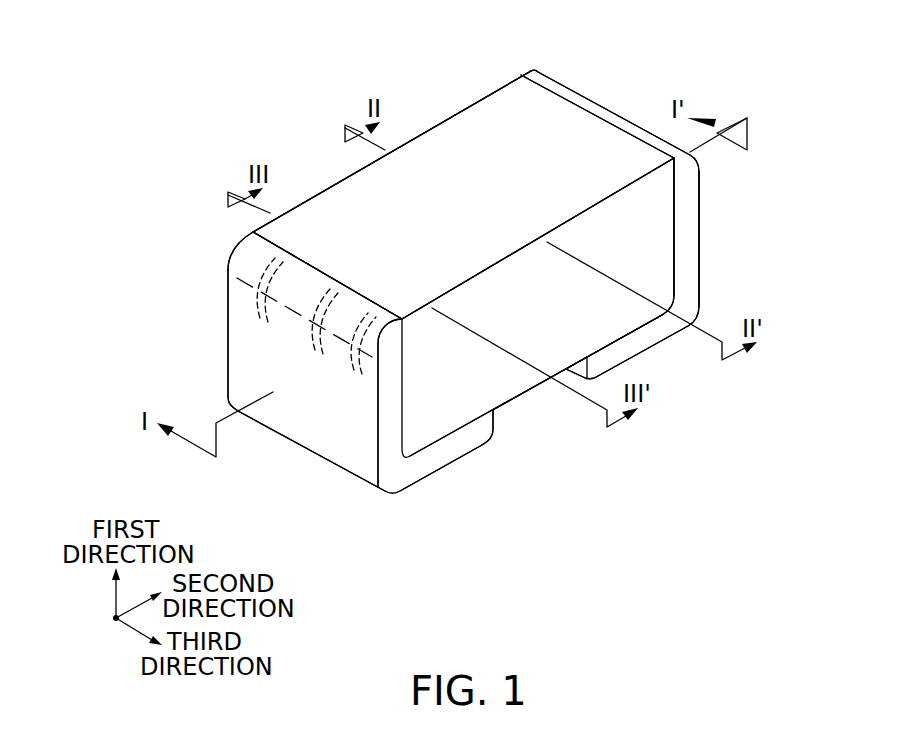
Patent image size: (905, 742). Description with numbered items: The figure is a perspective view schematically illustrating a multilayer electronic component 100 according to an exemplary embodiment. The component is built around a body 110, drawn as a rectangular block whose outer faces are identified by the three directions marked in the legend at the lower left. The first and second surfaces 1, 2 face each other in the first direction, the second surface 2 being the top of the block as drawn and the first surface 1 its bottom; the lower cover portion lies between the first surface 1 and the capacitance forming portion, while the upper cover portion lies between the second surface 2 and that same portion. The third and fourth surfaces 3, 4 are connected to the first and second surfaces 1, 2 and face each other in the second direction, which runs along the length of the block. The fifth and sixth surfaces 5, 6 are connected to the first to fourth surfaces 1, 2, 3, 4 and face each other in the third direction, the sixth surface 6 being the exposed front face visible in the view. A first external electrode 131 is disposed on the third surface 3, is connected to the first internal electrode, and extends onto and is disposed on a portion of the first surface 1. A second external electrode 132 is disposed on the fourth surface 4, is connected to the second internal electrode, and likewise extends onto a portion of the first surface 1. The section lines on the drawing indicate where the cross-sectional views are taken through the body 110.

The multilayer electronic component 100 is at (219, 44).
The body 110 is at (437, 145).
The first external electrode 131 is at (243, 253).
The second external electrode 132 is at (566, 93).
The first surface 1 is at (503, 420).
The second surface 2 is at (473, 129).
The third surface 3 is at (297, 422).
The fourth surface 4 is at (719, 217).
The fifth surface 5 is at (291, 187).
The sixth surface 6 is at (503, 368).